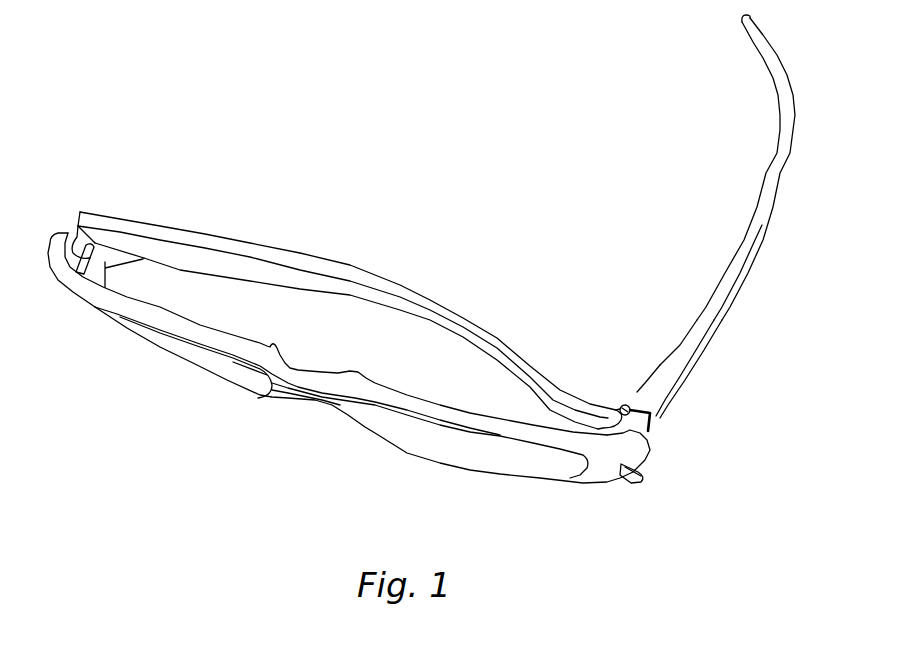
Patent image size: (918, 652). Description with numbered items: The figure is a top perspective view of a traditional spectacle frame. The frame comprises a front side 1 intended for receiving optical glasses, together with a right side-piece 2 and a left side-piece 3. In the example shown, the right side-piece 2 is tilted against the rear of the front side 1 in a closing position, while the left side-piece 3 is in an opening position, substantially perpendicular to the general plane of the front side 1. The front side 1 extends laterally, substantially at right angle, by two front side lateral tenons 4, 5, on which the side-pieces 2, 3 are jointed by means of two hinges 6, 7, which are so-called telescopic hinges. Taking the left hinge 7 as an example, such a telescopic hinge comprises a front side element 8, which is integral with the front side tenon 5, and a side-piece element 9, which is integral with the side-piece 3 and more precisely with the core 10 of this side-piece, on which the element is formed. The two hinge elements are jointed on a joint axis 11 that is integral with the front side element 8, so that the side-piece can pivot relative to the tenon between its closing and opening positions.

The front side 1 is at (305, 437).
The right side-piece 2 is at (230, 243).
The left side-piece 3 is at (663, 405).
The front side lateral tenon 4 is at (57, 247).
The front side lateral tenon 5 is at (628, 428).
The hinge 6 is at (69, 238).
The left hinge 7 is at (626, 402).
The front side element 8 is at (617, 418).
The side-piece element 9 is at (635, 395).
The core 10 is at (738, 255).
The joint axis 11 is at (618, 400).